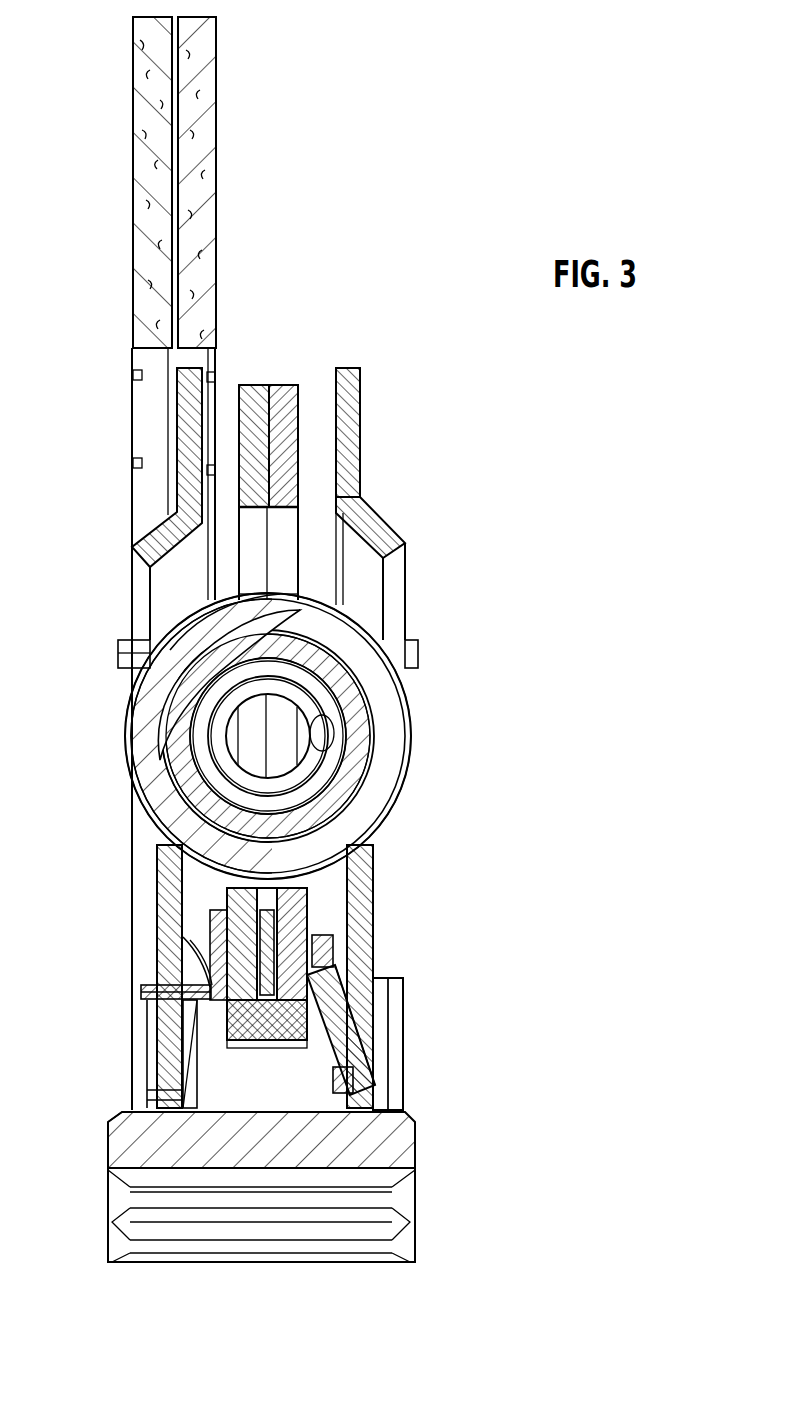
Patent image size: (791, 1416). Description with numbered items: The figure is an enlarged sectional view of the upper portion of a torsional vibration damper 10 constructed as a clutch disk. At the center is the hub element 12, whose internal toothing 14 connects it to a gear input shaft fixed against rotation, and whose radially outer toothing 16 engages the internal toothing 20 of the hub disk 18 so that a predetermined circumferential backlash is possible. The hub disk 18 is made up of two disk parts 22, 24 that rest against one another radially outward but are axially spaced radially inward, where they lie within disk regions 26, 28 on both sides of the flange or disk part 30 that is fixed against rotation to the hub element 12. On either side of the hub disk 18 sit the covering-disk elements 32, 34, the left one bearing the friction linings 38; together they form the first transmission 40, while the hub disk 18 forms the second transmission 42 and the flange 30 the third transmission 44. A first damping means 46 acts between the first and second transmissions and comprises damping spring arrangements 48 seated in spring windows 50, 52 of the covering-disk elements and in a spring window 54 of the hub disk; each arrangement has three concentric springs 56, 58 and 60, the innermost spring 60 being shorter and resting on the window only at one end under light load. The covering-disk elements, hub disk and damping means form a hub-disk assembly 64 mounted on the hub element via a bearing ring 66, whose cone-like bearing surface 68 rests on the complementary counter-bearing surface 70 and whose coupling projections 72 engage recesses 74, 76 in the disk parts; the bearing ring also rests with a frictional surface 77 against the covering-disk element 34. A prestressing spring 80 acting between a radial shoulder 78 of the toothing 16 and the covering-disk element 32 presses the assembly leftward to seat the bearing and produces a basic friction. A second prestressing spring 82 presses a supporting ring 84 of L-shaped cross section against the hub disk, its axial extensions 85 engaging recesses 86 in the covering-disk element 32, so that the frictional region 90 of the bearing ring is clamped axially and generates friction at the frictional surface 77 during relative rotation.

The torsional vibration damper 10 is at (376, 255).
The hub element 12 is at (415, 1255).
The internal toothing 14 is at (118, 1215).
The toothing 16 is at (380, 1172).
The hub disk 18 is at (283, 383).
The internal toothing 20 is at (247, 1043).
The disk part 22 is at (258, 383).
The disk part 24 is at (302, 483).
The disk region 26 is at (175, 888).
The disk region 28 is at (380, 900).
The flange or disk part 30 is at (380, 963).
The covering-disk element 32 is at (148, 538).
The covering-disk element 34 is at (372, 527).
The friction linings 38 is at (133, 137).
The first transmission 40 is at (445, 474).
The second transmission 42 is at (315, 446).
The third transmission 44 is at (304, 932).
The first damping means 46 is at (424, 781).
The damping spring arrangement 48 is at (434, 728).
The spring window 50 is at (160, 848).
The spring window 52 is at (380, 850).
The spring window 54 is at (283, 570).
The spring 56 is at (134, 743).
The spring 58 is at (165, 780).
The innermost spring 60 is at (318, 770).
The hub-disk assembly 64 is at (107, 489).
The bearing ring 66 is at (373, 985).
The bearing surface 68 is at (345, 1095).
The counter-bearing surface 70 is at (350, 1140).
The coupling projections 72 is at (160, 1075).
The recess 74 is at (160, 1015).
The recess 76 is at (340, 1040).
The frictional surface 77 is at (373, 1050).
The radial shoulder 78 is at (140, 1130).
The prestressing spring 80 is at (147, 1098).
The second prestressing spring 82 is at (150, 1040).
The supporting ring 84 is at (176, 923).
The axial extensions 85 is at (150, 992).
The recesses 86 is at (150, 964).
The frictional region 90 is at (380, 1005).